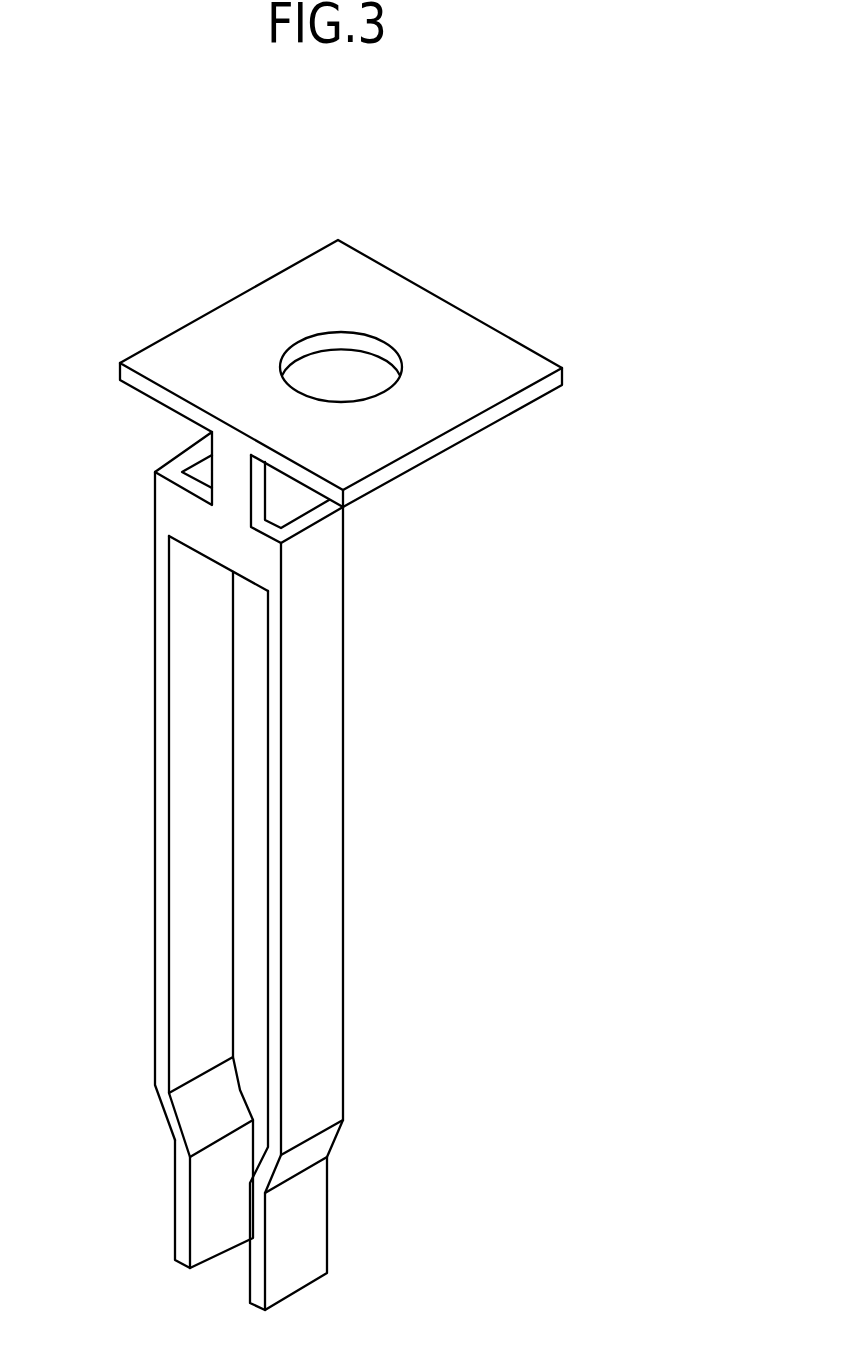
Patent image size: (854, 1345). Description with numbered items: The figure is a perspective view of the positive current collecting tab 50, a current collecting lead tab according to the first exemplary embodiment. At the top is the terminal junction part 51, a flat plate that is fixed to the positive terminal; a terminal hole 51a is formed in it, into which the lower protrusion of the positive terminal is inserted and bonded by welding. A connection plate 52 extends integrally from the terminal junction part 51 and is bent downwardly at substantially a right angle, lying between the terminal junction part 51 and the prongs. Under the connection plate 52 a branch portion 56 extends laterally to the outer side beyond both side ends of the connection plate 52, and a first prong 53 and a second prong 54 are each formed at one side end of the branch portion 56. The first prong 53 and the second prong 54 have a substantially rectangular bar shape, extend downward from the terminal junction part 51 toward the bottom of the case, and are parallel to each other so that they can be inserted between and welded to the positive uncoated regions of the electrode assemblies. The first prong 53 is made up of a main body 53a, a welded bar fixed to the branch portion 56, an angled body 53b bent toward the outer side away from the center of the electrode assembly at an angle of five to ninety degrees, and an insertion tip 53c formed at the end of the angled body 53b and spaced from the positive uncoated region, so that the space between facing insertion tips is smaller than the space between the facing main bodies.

The positive current collecting tab 50 is at (457, 271).
The terminal junction part 51 is at (322, 277).
The terminal hole 51a is at (322, 367).
The connection plate 52 is at (243, 499).
The first prong 53 is at (130, 998).
The main body 53a is at (190, 635).
The angled body 53b is at (196, 1113).
The insertion tip 53c is at (208, 1203).
The second prong 54 is at (370, 1020).
The branch portion 56 is at (265, 567).